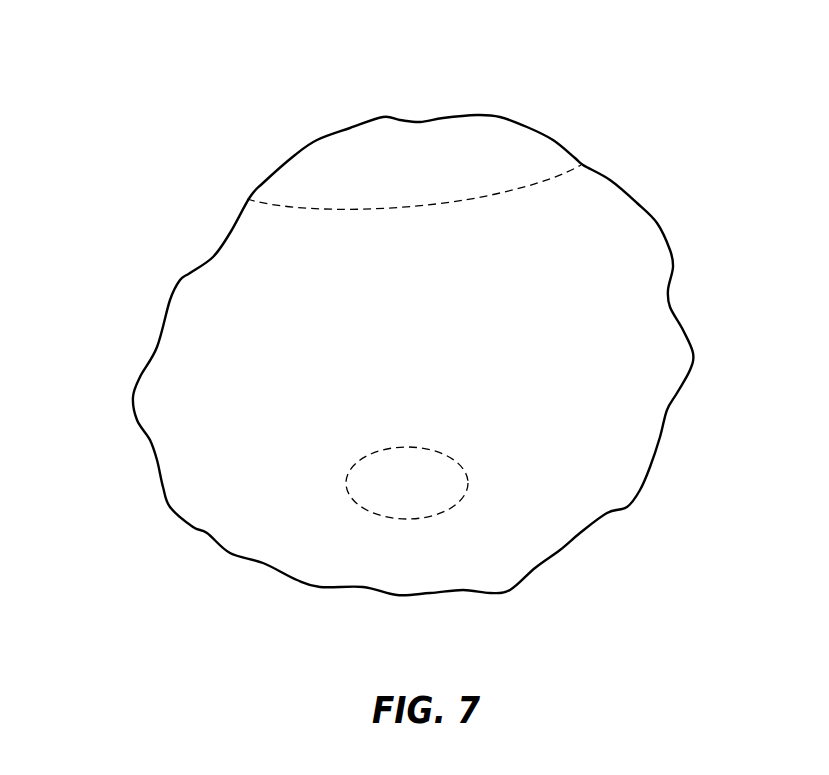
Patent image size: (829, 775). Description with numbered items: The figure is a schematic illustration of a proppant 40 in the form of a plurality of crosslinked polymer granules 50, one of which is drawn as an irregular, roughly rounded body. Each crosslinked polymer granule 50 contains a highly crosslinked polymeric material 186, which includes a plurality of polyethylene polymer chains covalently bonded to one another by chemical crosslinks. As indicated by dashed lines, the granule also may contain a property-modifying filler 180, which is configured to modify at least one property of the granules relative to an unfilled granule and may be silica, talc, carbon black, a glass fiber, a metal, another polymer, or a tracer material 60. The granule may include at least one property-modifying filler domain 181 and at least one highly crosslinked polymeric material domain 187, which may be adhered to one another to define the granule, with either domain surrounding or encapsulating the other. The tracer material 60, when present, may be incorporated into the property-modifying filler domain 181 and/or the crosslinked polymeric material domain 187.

The proppant 40 is at (130, 82).
The crosslinked polymer granule 50 is at (210, 257).
The tracer material 60 is at (422, 158).
The property-modifying filler 180 is at (322, 175).
The property-modifying filler domain 181 is at (270, 203).
The highly crosslinked polymeric material 186 is at (610, 448).
The highly crosslinked polymeric material domain 187 is at (595, 492).